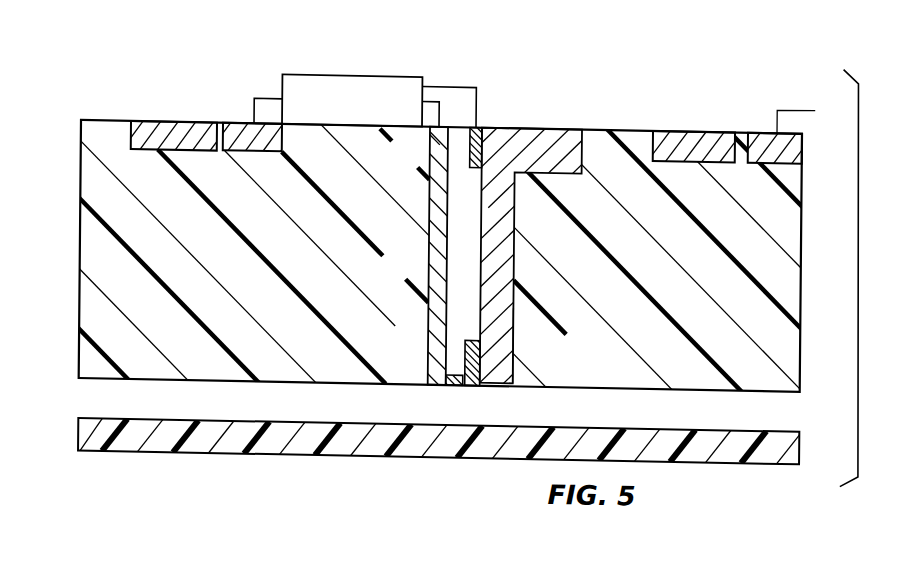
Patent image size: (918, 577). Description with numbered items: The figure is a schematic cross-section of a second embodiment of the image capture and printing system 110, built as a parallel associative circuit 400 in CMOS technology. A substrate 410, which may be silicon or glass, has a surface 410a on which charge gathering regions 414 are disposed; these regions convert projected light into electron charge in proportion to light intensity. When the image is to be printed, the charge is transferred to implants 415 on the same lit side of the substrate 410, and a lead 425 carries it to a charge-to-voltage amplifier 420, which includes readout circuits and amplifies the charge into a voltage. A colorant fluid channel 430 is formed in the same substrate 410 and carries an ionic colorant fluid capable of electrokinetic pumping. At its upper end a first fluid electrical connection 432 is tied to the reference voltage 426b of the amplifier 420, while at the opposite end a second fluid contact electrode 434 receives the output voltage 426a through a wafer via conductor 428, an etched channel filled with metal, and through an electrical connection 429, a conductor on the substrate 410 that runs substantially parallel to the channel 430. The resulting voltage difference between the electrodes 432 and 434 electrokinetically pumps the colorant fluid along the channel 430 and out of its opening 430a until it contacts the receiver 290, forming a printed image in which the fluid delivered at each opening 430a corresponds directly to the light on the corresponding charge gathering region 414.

The sensor module 110 is at (492, 22).
The sensor assembly 400 is at (78, 108).
The substrate 410 is at (793, 222).
The surface 410a is at (623, 121).
The charge gathering regions 414 is at (157, 125).
The implants 415 is at (240, 127).
The charge-to-voltage amplifier 420 is at (387, 69).
The lead 425 is at (258, 93).
The output voltage 426a is at (447, 101).
The reference voltage 426b is at (477, 109).
The wafer via conductor 428 is at (431, 259).
The electrical connection 429 is at (462, 379).
The colorant fluid channel 430 is at (513, 249).
The opening 430a is at (503, 365).
The first fluid electrical connection 432 is at (470, 146).
The second fluid contact electrode 434 is at (466, 345).
The receiver 290 is at (442, 449).